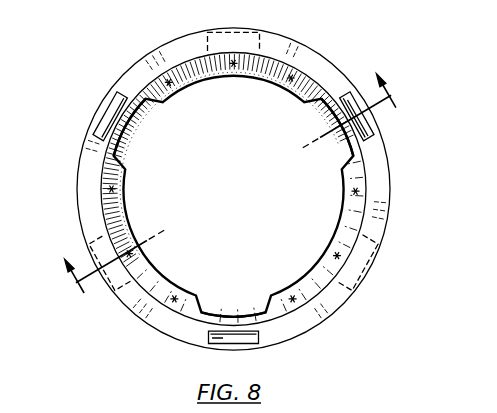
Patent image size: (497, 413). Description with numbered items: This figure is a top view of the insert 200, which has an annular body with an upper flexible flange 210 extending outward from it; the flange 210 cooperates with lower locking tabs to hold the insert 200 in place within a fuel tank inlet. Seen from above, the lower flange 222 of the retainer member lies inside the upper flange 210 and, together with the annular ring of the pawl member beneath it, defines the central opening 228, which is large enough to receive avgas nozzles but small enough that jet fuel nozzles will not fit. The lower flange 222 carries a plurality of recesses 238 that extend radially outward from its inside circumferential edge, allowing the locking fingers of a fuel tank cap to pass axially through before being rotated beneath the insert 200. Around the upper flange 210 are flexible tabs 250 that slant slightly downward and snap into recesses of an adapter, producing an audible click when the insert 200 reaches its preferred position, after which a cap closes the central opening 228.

The insert 200 is at (328, 46).
The upper flexible flange 210 is at (389, 202).
The lower flange 222 is at (195, 89).
The central opening 228 is at (235, 177).
The recesses 238 is at (123, 145).
The flexible tabs 250 is at (111, 119).